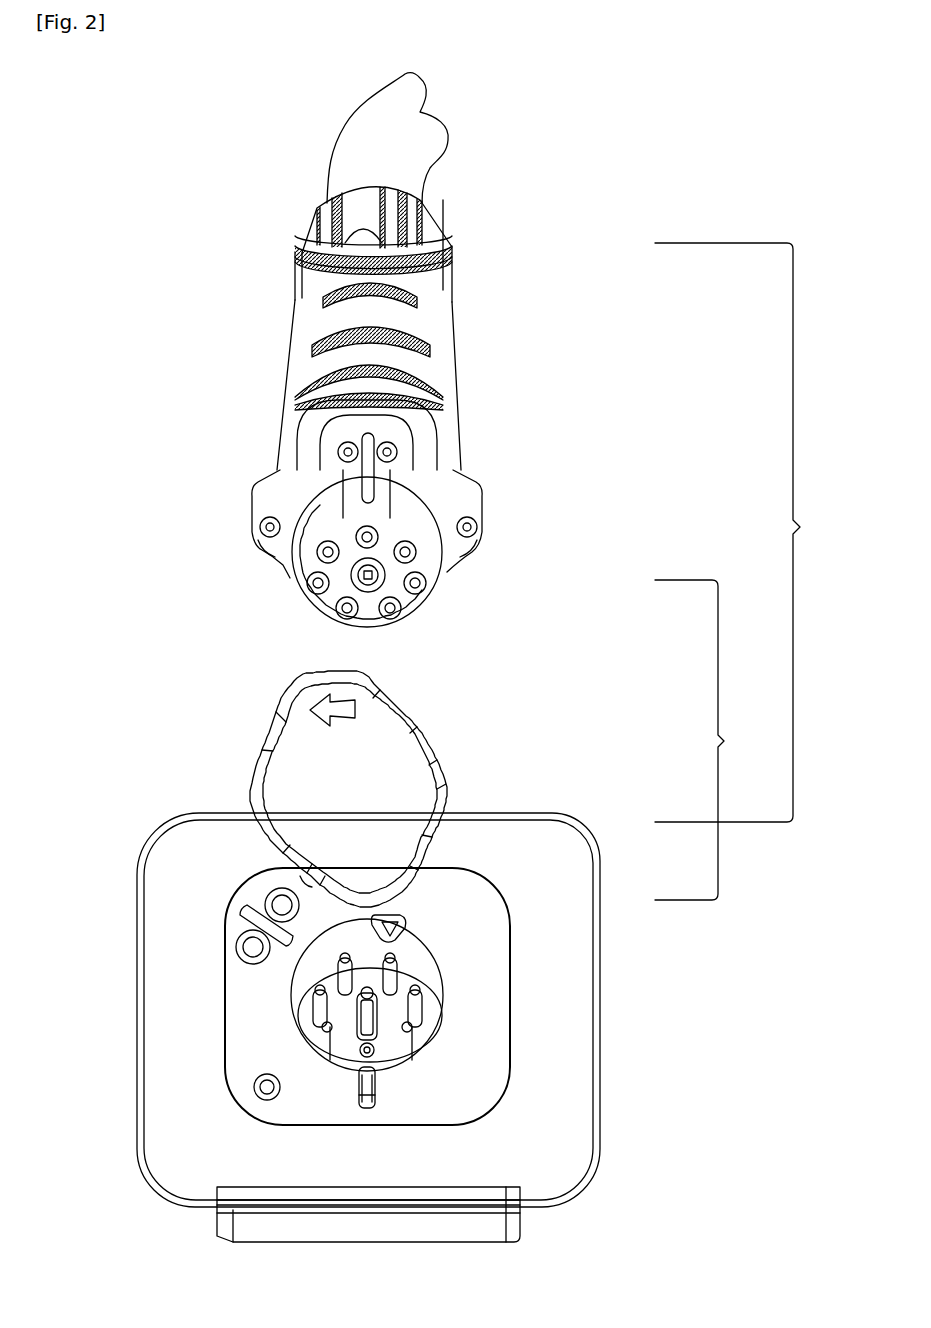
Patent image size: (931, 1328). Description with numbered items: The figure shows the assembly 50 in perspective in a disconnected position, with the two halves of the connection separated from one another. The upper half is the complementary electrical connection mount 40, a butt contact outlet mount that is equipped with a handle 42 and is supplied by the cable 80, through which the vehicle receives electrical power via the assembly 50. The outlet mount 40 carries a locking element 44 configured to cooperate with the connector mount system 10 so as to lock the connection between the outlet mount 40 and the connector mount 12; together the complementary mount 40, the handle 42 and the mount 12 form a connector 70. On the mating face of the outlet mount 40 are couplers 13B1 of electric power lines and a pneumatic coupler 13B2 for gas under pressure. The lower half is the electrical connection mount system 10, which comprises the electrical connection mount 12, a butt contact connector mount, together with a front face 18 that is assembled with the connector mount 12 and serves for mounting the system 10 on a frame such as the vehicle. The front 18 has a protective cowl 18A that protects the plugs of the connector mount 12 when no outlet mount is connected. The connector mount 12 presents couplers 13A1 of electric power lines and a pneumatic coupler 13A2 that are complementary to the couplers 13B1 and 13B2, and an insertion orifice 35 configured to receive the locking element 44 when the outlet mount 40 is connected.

The cable 80 is at (356, 136).
The handle 42 is at (443, 337).
The locking element 44 is at (390, 470).
The complementary electrical connection mount 40 is at (443, 563).
The connector 70 is at (744, 532).
The pneumatic coupler 13B2 is at (397, 523).
The coupler of electric power lines 13B1 is at (320, 566).
The assembly 50 is at (707, 740).
The protective cowl 18A is at (285, 760).
The electrical connection mount 12 is at (372, 977).
The electrical connection mount system 10 is at (613, 917).
The front face 18 is at (177, 1157).
The coupler of electric power lines 13A1 is at (323, 1027).
The pneumatic coupler 13A2 is at (362, 1052).
The insertion orifice 35 is at (380, 1089).